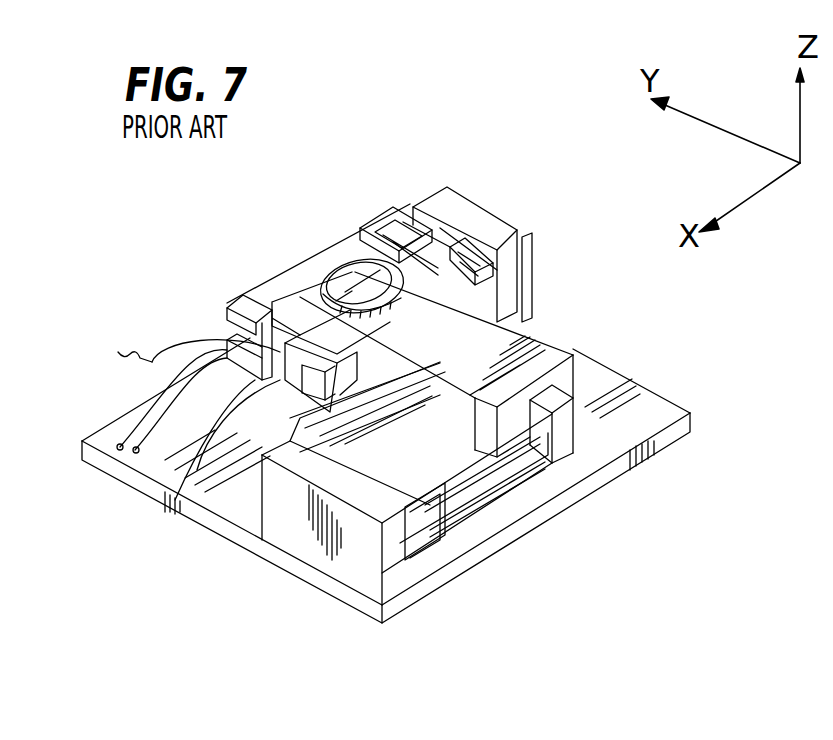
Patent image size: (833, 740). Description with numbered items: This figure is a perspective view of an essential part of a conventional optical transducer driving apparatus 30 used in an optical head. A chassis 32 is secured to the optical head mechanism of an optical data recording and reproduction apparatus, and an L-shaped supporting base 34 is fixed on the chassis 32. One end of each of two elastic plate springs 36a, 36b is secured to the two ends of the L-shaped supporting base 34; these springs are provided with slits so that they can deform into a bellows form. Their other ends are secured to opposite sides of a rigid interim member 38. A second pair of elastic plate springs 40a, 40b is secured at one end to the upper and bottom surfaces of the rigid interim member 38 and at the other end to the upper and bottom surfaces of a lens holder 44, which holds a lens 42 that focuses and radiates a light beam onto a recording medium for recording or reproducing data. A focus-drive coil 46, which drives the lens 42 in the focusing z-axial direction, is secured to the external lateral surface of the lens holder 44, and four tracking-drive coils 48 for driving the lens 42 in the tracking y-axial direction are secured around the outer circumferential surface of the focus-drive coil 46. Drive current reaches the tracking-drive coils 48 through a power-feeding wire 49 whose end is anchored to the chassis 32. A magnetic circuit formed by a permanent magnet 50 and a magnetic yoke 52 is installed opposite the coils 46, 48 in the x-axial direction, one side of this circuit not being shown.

The optical head apparatus 30 is at (361, 186).
The chassis 32 is at (125, 476).
The L-shaped supporting base 34 is at (298, 547).
The elastic plate spring 36a is at (418, 537).
The elastic plate spring 36b is at (300, 455).
The rigid interim member 38 is at (577, 380).
The elastic plate spring 40a is at (490, 333).
The elastic plate spring 40b is at (452, 425).
The lens 42 is at (347, 278).
The lens holder 44 is at (302, 305).
The focus-drive coil 46 is at (270, 337).
The tracking-drive coil 48 is at (395, 212).
The power-feeding wire 49 is at (120, 352).
The permanent magnet 50 is at (488, 225).
The magnetic yoke 52 is at (536, 248).